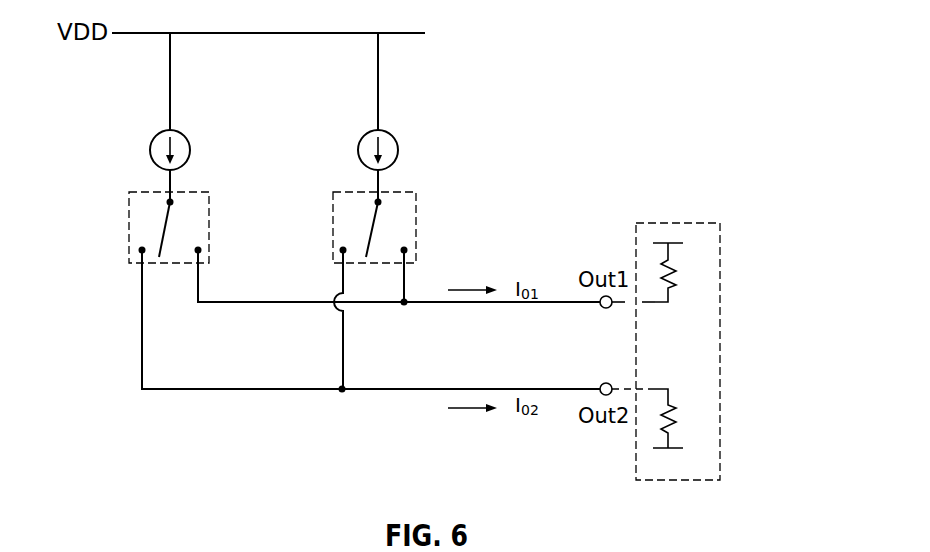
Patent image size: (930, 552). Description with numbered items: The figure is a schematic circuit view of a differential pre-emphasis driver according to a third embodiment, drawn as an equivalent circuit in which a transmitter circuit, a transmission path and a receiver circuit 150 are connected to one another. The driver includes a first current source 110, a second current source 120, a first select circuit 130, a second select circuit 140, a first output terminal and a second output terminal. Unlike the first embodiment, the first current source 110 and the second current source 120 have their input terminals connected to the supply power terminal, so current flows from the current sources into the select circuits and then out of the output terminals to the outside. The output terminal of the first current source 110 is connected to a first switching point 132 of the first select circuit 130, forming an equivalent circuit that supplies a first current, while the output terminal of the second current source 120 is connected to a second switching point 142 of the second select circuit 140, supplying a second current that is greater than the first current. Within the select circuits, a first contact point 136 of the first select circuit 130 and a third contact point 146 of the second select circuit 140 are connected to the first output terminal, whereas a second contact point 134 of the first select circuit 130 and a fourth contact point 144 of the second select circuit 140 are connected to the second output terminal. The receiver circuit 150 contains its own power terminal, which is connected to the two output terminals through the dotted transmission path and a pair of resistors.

The first current source 110 is at (191, 146).
The second current source 120 is at (400, 147).
The first select circuit 130 is at (128, 223).
The first switching point 132 is at (168, 202).
The second contact point 134 is at (141, 250).
The first contact point 136 is at (200, 250).
The second select circuit 140 is at (417, 218).
The second switching point 142 is at (376, 202).
The fourth contact point 144 is at (341, 250).
The third contact point 146 is at (406, 250).
The receiver circuit 150 is at (721, 352).